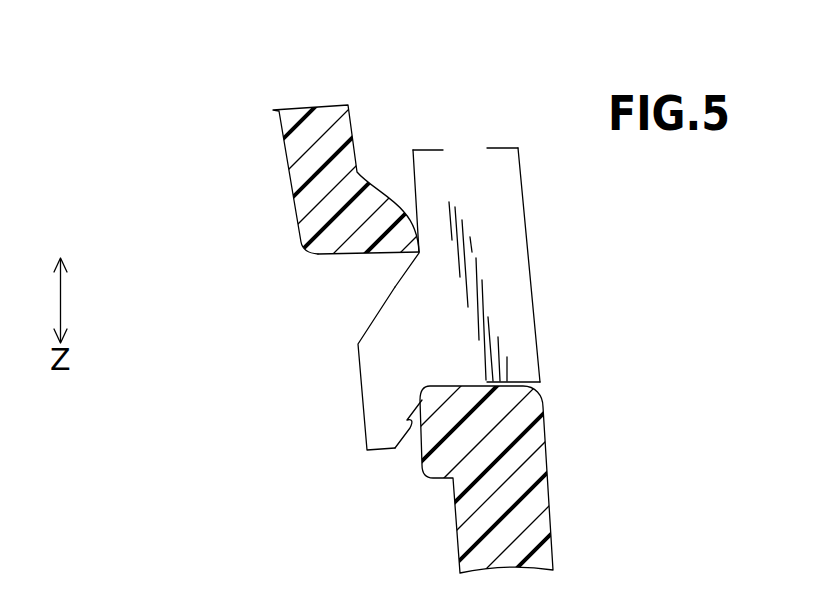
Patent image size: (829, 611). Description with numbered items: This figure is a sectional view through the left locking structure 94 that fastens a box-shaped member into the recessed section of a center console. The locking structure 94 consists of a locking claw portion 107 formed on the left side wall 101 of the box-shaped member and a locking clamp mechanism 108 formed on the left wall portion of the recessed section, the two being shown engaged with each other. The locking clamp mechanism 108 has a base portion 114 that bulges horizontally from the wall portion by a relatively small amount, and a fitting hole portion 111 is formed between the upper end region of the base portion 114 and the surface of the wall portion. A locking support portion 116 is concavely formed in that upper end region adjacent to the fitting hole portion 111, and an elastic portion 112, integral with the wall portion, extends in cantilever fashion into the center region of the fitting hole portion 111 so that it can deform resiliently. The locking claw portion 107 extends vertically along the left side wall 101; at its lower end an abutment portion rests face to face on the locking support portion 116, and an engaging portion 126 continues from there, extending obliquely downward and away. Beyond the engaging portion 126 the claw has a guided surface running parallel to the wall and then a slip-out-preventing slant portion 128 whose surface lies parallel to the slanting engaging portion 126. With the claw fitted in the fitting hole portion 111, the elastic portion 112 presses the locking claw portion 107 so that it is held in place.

The locking structure 94 is at (508, 60).
The locking clamp mechanism 108 is at (382, 141).
The locking claw portion 107 is at (472, 162).
The left side wall 101 is at (530, 282).
The elastic portion 112 is at (407, 254).
The slip-out-preventing slant portion 128 is at (405, 278).
The fitting hole portion 111 is at (365, 297).
The locking support portion 116 is at (458, 383).
The engaging portion 126 is at (412, 433).
The base portion 114 is at (547, 490).